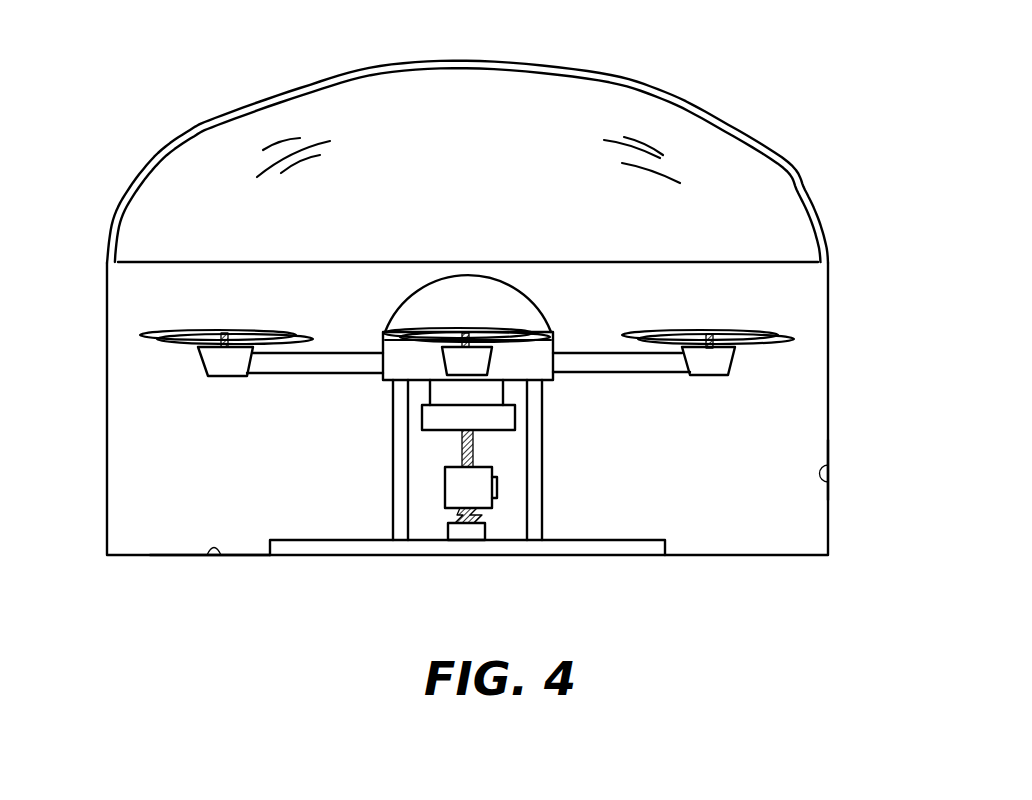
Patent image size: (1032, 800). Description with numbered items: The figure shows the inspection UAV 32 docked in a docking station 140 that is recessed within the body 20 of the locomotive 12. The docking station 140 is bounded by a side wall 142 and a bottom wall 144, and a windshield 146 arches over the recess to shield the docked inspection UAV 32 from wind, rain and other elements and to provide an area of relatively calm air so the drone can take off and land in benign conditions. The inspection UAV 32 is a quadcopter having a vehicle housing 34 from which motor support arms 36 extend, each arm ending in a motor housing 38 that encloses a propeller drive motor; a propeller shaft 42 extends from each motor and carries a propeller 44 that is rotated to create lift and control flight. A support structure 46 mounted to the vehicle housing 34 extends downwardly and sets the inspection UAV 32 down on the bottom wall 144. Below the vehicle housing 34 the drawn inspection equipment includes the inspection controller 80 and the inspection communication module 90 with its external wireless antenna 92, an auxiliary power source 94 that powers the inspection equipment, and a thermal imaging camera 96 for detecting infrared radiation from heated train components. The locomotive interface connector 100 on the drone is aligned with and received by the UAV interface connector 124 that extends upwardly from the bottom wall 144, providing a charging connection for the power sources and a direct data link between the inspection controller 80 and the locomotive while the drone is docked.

The locomotive 12 is at (413, 417).
The body 20 is at (413, 417).
The inspection UAV 32 is at (491, 305).
The vehicle housing 34 is at (430, 280).
The motor support arms 36 is at (318, 368).
The motor housing 38 is at (200, 366).
The propeller shafts 42 is at (224, 335).
The propellers 44 is at (160, 330).
The support structure 46 is at (310, 547).
The inspection controller 80 is at (431, 460).
The inspection communication module 90 is at (420, 417).
The external wireless antenna 92 is at (473, 442).
The auxiliary power source 94 is at (500, 392).
The thermal imaging camera 96 is at (452, 487).
The locomotive interface connector 100 is at (482, 517).
The UAV interface connector 124 is at (468, 532).
The docking station 140 is at (135, 481).
The side wall 142 is at (830, 460).
The bottom wall 144 is at (213, 548).
The windshield 146 is at (665, 92).